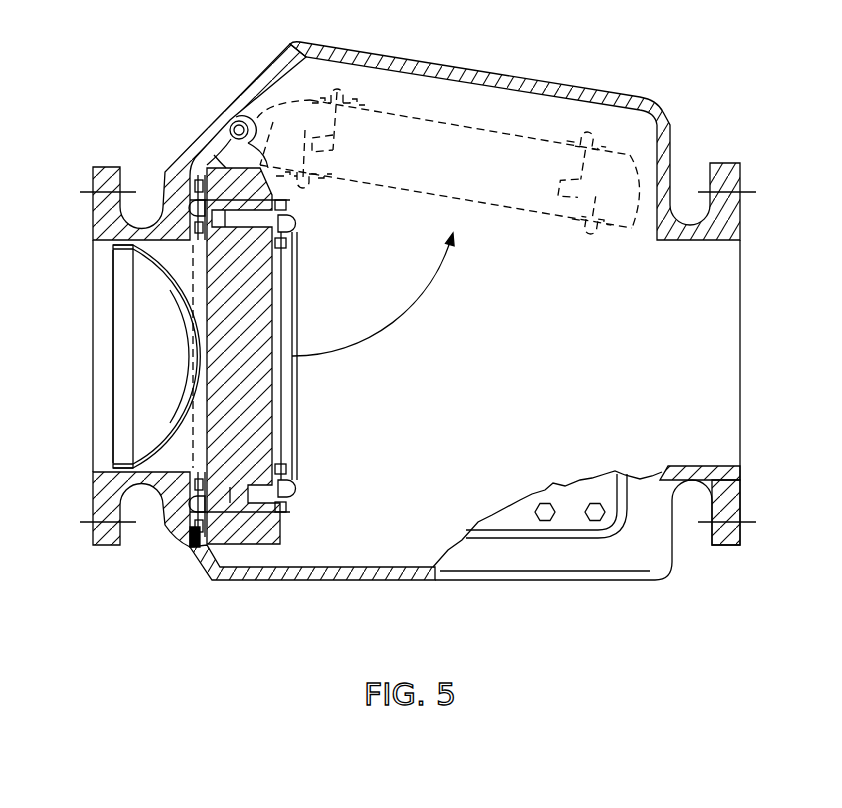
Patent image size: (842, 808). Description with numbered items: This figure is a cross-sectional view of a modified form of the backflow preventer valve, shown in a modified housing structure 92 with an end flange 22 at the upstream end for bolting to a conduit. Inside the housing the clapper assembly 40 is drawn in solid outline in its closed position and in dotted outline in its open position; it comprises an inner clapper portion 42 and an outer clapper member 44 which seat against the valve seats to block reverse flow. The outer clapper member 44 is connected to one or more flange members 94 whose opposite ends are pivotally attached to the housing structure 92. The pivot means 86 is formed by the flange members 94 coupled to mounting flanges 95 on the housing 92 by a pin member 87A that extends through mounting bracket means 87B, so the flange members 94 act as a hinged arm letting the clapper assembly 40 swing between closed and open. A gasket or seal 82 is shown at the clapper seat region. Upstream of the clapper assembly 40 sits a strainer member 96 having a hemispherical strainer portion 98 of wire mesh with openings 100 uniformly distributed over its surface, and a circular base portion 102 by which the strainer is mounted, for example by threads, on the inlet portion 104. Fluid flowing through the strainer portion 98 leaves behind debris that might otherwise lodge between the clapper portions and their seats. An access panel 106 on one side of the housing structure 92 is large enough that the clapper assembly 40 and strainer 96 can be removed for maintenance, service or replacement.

The end flange 22 is at (94, 170).
The modified housing structure 92 is at (323, 582).
The access panel 106 is at (577, 520).
The base portion 102 is at (123, 347).
The strainer member 96 is at (113, 383).
The inlet portion 104 is at (107, 458).
The openings 100 is at (157, 247).
The strainer portion 98 is at (174, 421).
The clapper portion 42 is at (252, 310).
The clapper assembly 40 is at (296, 380).
The outer clapper member 44 is at (262, 518).
The gasket 82 is at (176, 545).
The pivot means 86 is at (235, 121).
The pin member 87A is at (224, 139).
The mounting bracket means 87B is at (247, 113).
The mounting flanges 95 is at (224, 148).
The flange members 94 is at (228, 160).